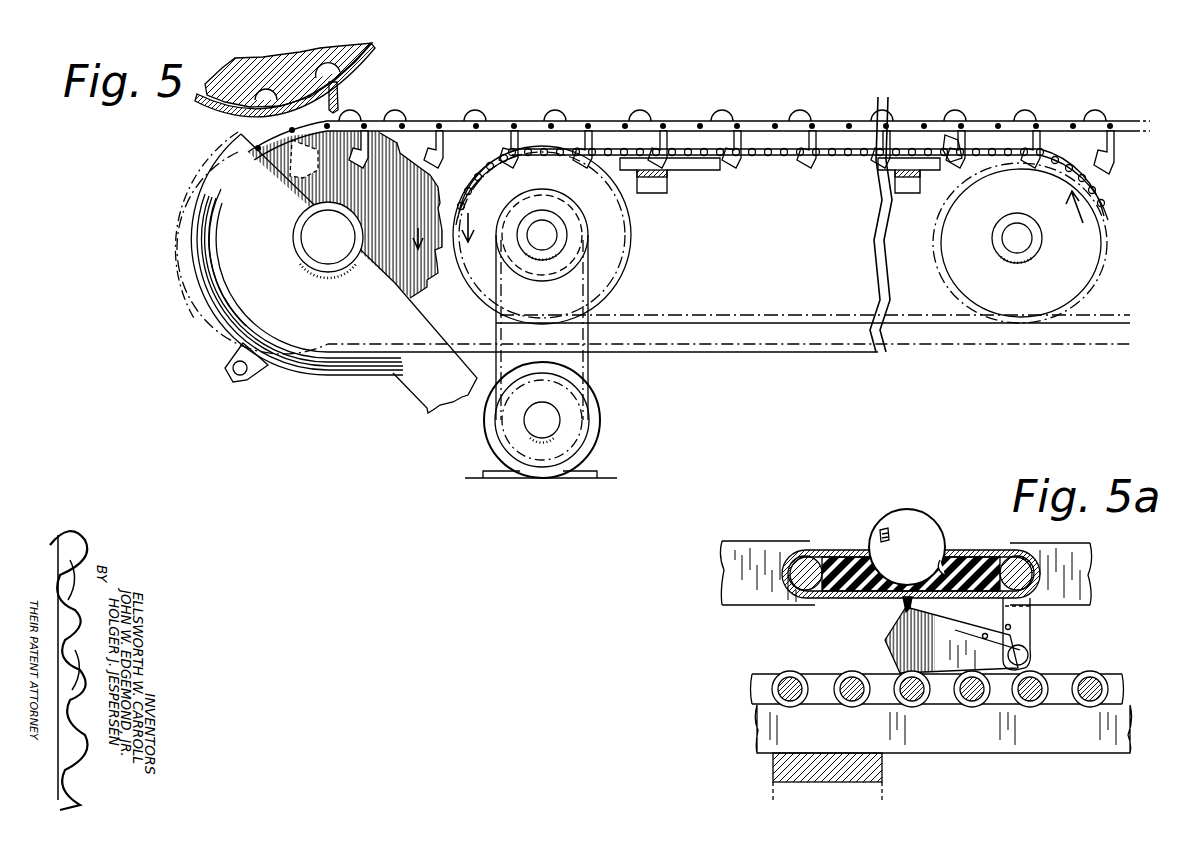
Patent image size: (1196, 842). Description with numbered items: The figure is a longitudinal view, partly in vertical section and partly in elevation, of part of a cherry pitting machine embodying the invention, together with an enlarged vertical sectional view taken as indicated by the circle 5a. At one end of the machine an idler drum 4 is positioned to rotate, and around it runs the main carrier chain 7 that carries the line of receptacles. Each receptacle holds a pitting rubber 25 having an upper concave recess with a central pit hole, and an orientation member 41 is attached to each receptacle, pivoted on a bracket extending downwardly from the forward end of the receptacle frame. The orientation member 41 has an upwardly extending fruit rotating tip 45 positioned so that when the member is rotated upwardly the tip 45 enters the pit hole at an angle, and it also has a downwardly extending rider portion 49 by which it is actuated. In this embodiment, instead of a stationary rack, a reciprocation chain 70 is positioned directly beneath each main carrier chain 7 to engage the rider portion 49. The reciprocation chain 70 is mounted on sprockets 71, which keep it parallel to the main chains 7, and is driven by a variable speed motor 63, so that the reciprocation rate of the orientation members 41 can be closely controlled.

In FIG. 5, the idler drum 4 is at (300, 166).
In FIG. 5, the main carrier chain 7 is at (851, 117).
In FIG. 5A, the main carrier chain 7 is at (1104, 546).
In FIG. 5A, the pitting rubber 25 is at (833, 560).
In FIG. 5, the orientation member 41 is at (951, 140).
In FIG. 5A, the orientation member 41 is at (988, 612).
In FIG. 5A, the fruit rotating tip 45 is at (903, 598).
In FIG. 5A, the rider portion 49 is at (925, 640).
In FIG. 5, the variable speed motor 63 is at (598, 412).
In FIG. 5, the reciprocation chain 70 is at (806, 158).
In FIG. 5A, the reciprocation chain 70 is at (1062, 672).
In FIG. 5, the sprockets 71 is at (588, 197).
In FIG. 5, the circle 5a is at (750, 106).